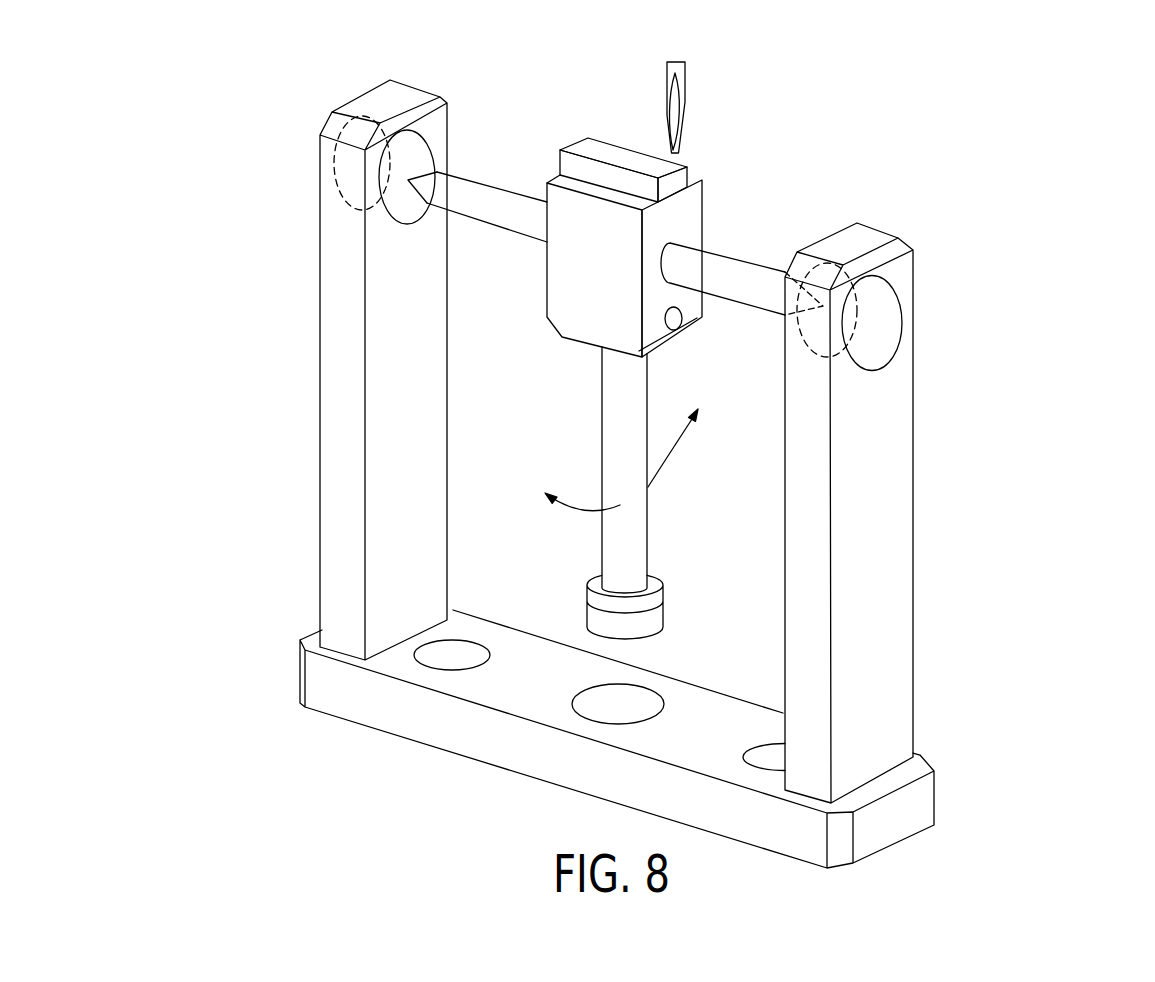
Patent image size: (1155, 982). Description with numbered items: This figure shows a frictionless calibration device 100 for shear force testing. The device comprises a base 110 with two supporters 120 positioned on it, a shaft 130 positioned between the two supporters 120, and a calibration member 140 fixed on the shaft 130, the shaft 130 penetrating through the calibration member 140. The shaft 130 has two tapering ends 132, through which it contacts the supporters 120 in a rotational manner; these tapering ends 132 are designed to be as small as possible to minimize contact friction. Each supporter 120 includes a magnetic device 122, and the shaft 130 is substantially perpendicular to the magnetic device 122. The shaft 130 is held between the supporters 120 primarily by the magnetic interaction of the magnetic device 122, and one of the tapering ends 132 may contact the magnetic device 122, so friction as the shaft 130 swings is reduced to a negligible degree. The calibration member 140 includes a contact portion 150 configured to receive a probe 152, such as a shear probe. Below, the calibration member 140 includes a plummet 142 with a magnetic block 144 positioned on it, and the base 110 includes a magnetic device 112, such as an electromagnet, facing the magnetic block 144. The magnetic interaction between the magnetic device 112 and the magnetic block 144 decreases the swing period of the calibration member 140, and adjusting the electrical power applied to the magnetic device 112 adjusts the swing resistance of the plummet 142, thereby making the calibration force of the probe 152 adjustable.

The frictionless calibration device 100 is at (1048, 238).
The base 110 is at (922, 804).
The magnetic device 112 is at (585, 703).
The supporter 120 is at (903, 484).
The magnetic device 122 is at (393, 203).
The shaft 130 is at (501, 200).
The tapering end 132 is at (432, 168).
The calibration member 140 is at (693, 213).
The plummet 142 is at (639, 537).
The magnetic block 144 is at (655, 618).
The contact portion 150 is at (620, 183).
The probe 152 is at (683, 82).